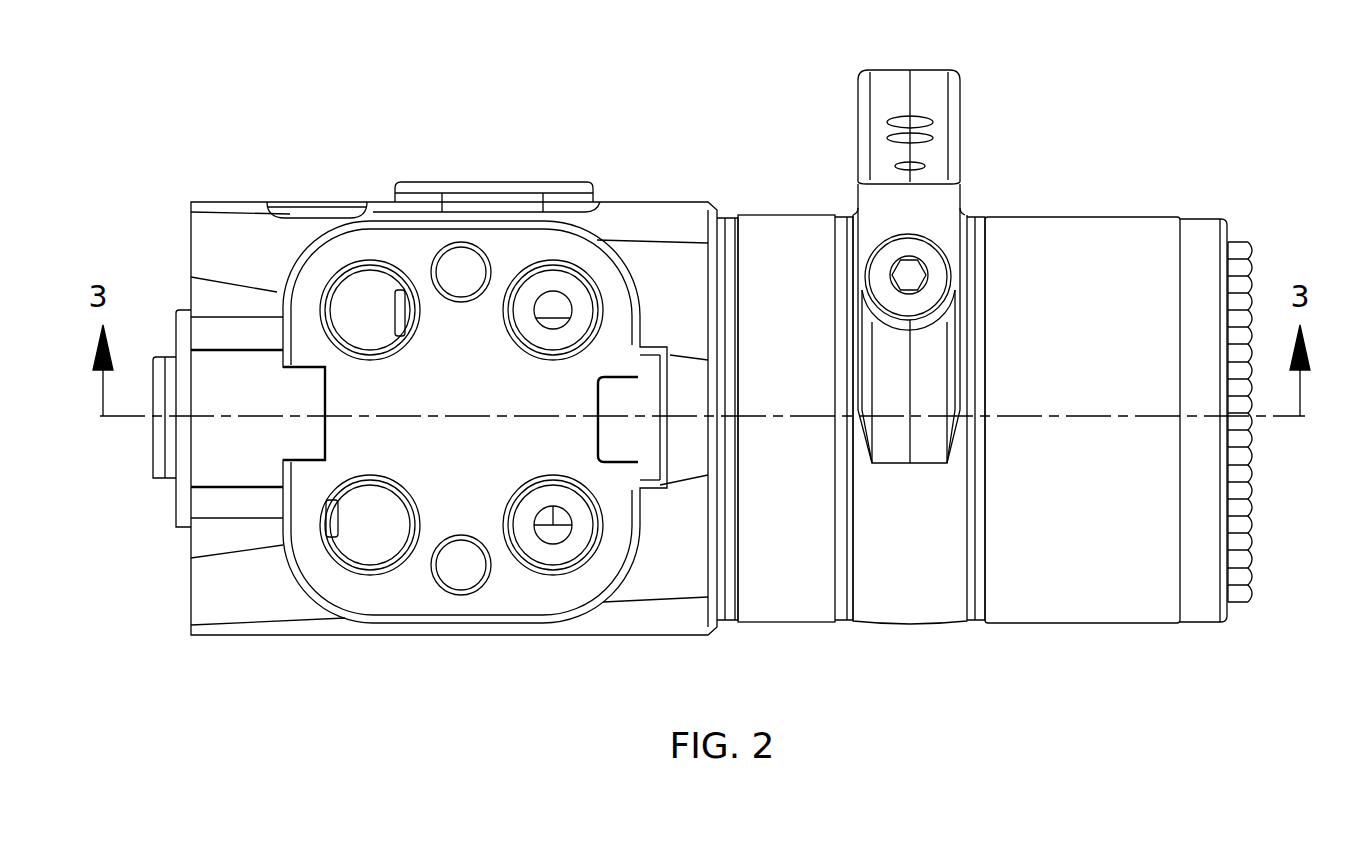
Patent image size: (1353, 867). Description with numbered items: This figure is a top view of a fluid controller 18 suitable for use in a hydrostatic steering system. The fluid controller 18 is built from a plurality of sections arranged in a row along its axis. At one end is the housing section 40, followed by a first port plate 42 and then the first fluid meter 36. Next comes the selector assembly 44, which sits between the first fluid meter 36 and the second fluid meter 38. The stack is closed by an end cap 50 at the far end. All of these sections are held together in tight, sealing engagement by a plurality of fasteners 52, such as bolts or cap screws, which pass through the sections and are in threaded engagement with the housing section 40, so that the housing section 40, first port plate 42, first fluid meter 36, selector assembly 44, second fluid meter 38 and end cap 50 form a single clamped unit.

The fluid controller 18 is at (314, 66).
The housing section 40 is at (629, 188).
The first port plate 42 is at (728, 218).
The first fluid meter 36 is at (788, 623).
The selector assembly 44 is at (978, 86).
The second fluid meter 38 is at (1075, 623).
The end cap 50 is at (1205, 220).
The fasteners 52 is at (1245, 248).